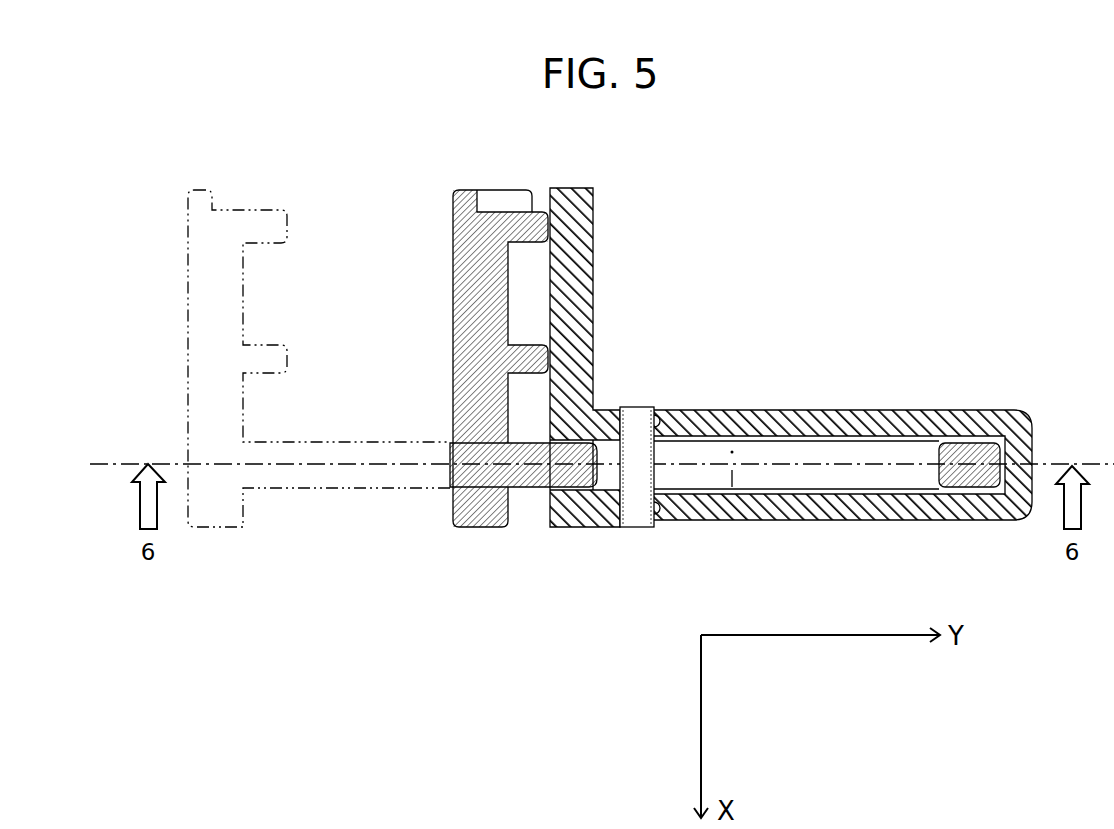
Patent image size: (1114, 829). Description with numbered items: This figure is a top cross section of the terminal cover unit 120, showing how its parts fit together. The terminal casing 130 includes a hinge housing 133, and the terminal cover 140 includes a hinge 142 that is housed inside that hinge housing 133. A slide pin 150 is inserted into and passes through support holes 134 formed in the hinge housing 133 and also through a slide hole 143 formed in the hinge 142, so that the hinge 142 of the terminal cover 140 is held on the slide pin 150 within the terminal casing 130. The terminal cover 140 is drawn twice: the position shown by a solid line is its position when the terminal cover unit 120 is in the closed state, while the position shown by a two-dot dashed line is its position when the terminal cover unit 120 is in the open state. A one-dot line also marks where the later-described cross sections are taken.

The terminal cover unit 120 is at (155, 150).
The terminal casing 130 is at (587, 233).
The hinge housing 133 is at (980, 410).
The support holes 134 is at (658, 410).
The terminal cover 140 is at (222, 226).
The hinge 142 is at (958, 445).
The slide hole 143 is at (712, 468).
The slide pin 150 is at (622, 528).